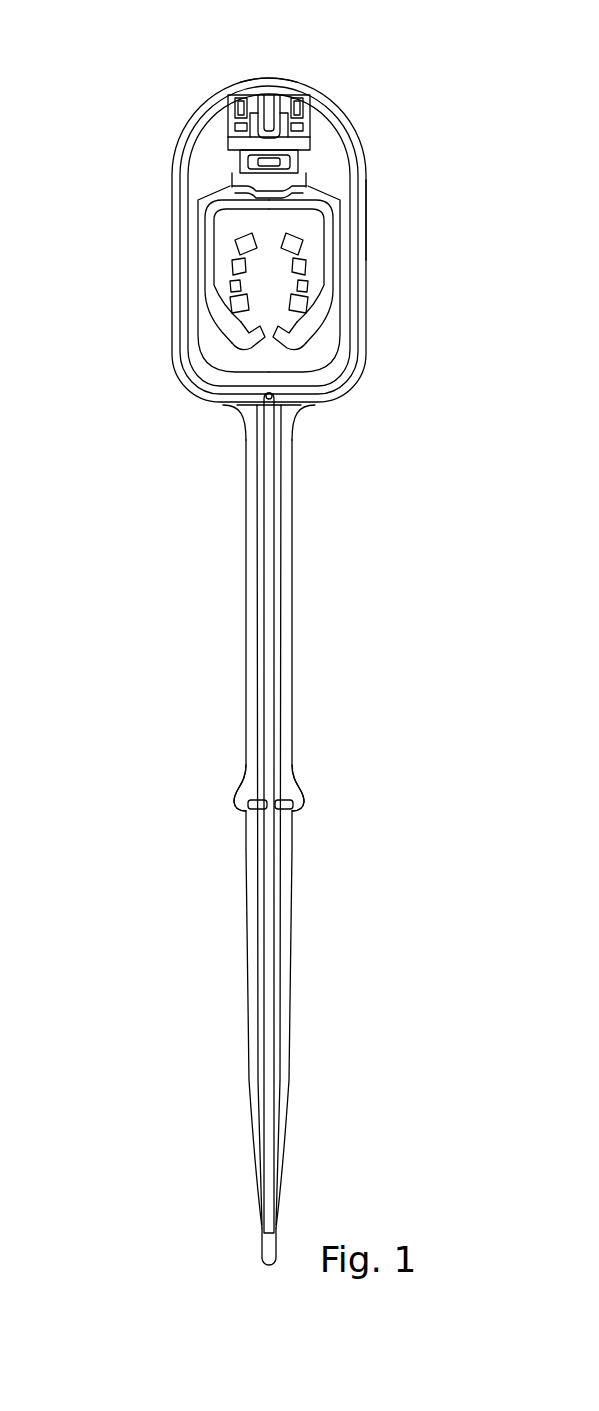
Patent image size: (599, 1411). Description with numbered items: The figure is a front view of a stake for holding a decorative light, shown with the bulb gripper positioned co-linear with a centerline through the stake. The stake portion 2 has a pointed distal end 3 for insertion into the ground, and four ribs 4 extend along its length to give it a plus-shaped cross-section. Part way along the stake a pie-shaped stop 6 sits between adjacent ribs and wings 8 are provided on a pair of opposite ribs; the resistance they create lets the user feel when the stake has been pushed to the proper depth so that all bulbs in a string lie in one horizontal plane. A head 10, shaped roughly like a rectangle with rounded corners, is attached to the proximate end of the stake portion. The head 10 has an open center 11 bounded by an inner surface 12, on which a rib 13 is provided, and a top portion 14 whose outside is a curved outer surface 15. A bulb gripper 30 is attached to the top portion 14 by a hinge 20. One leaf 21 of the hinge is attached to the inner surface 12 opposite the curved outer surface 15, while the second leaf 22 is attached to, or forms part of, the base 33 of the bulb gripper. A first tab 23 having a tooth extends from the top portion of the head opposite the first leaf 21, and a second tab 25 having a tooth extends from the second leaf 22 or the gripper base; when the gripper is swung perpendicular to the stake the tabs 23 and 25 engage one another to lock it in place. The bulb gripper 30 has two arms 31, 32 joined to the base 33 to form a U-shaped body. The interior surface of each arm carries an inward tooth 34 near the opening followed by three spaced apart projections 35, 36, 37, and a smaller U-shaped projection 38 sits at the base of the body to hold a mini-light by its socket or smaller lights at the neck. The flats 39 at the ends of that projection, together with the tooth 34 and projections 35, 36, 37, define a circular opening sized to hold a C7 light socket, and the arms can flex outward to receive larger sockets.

The stake portion 2 is at (172, 622).
The distal end 3 is at (260, 1256).
The ribs 4 is at (282, 550).
The stop 6 is at (294, 797).
The wings 8 is at (232, 797).
The head 10 is at (382, 134).
The open center 11 is at (276, 362).
The inner surface 12 is at (335, 209).
The rib 13 is at (346, 265).
The top portion 14 is at (222, 87).
The curved outer surface 15 is at (272, 79).
The hinge 20 is at (225, 138).
The first leaf 21 is at (227, 124).
The second leaf 22 is at (222, 157).
The first tab 23 is at (284, 154).
The second tab 25 is at (322, 176).
The bulb gripper 30 is at (326, 303).
The first arm 31 is at (323, 326).
The second arm 32 is at (207, 207).
The base 33 is at (308, 184).
The inward tooth 34 is at (255, 336).
The first projection 35 is at (230, 314).
The second projection 36 is at (220, 295).
The third projection 37 is at (223, 275).
The U-shaped projection 38 is at (237, 240).
The flats 39 is at (228, 258).